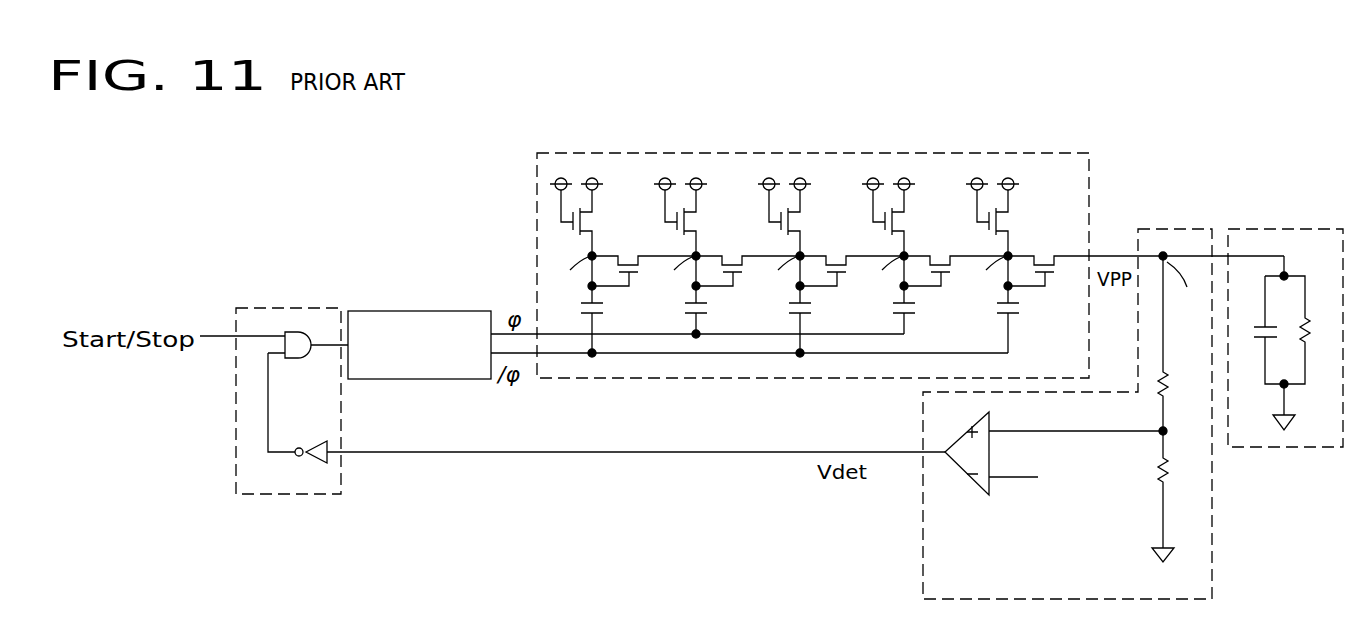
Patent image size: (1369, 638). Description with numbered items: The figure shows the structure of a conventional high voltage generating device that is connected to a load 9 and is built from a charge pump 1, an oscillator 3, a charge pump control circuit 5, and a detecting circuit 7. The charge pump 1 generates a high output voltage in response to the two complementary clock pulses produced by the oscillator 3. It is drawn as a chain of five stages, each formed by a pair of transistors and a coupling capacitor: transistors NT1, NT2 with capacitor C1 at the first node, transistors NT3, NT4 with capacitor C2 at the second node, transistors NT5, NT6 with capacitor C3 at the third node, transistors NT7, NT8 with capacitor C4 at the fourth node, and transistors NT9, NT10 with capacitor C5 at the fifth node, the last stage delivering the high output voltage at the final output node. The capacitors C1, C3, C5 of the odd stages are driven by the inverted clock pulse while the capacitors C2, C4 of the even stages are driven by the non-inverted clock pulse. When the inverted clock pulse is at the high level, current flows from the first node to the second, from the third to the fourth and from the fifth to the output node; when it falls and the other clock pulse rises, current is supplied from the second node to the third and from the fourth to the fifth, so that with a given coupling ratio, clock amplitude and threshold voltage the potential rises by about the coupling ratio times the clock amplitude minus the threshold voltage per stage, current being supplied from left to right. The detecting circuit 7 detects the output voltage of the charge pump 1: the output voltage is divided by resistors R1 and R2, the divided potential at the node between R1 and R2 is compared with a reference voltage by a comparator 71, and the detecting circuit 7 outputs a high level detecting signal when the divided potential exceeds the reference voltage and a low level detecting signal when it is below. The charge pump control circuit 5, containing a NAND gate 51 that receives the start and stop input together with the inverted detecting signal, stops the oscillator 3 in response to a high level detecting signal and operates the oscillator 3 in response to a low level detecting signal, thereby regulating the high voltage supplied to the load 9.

The charge pump 1 is at (537, 202).
The oscillator 3 is at (445, 310).
The charge pump control circuit 5 is at (292, 373).
The NAND gate 51 is at (297, 358).
The detecting circuit 7 is at (1181, 228).
The comparator 71 is at (960, 467).
The load 9 is at (1300, 228).
The transistor NT1 is at (590, 217).
The transistor NT2 is at (642, 261).
The transistor NT3 is at (694, 217).
The transistor NT4 is at (746, 261).
The transistor NT5 is at (798, 217).
The transistor NT6 is at (850, 261).
The transistor NT7 is at (902, 217).
The transistor NT8 is at (954, 261).
The transistor NT9 is at (1006, 217).
The transistor NT10 is at (1144, 261).
The capacitor C1 is at (604, 306).
The capacitor C2 is at (708, 297).
The capacitor C3 is at (812, 306).
The capacitor C4 is at (916, 295).
The capacitor C5 is at (1020, 304).
The resistor R1 is at (1179, 343).
The resistor R2 is at (1179, 489).